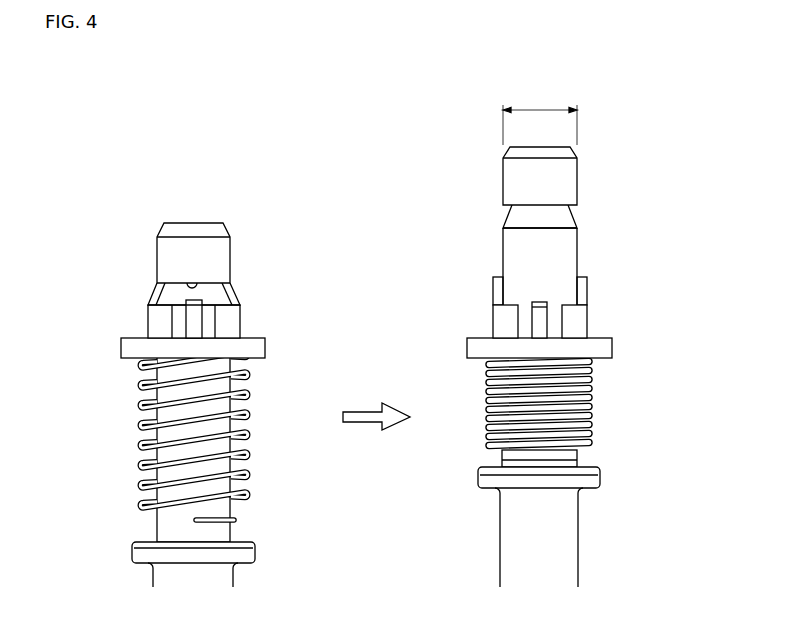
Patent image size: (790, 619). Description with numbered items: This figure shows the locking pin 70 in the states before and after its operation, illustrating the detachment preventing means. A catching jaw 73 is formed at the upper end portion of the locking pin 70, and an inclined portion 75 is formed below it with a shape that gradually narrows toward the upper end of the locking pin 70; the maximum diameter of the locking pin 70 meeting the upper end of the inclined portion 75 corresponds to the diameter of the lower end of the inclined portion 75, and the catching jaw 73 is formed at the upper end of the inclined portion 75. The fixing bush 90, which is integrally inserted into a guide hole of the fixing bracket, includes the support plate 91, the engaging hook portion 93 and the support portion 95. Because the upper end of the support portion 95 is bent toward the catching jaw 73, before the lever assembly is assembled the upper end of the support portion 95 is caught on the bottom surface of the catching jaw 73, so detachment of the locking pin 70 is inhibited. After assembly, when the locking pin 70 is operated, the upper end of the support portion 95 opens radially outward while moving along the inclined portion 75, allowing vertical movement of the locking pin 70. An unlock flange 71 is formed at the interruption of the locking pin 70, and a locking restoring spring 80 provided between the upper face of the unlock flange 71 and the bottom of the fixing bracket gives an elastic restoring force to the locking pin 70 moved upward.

The locking pin 70 is at (570, 256).
The unlock flange 71 is at (138, 552).
The catching jaw 73 is at (190, 284).
The inclined portion 75 is at (157, 291).
The locking restoring spring 80 is at (142, 436).
The fixing bush 90 is at (370, 317).
The support plate 91 is at (121, 347).
The engaging hook portion 93 is at (198, 304).
The support portion 95 is at (150, 302).